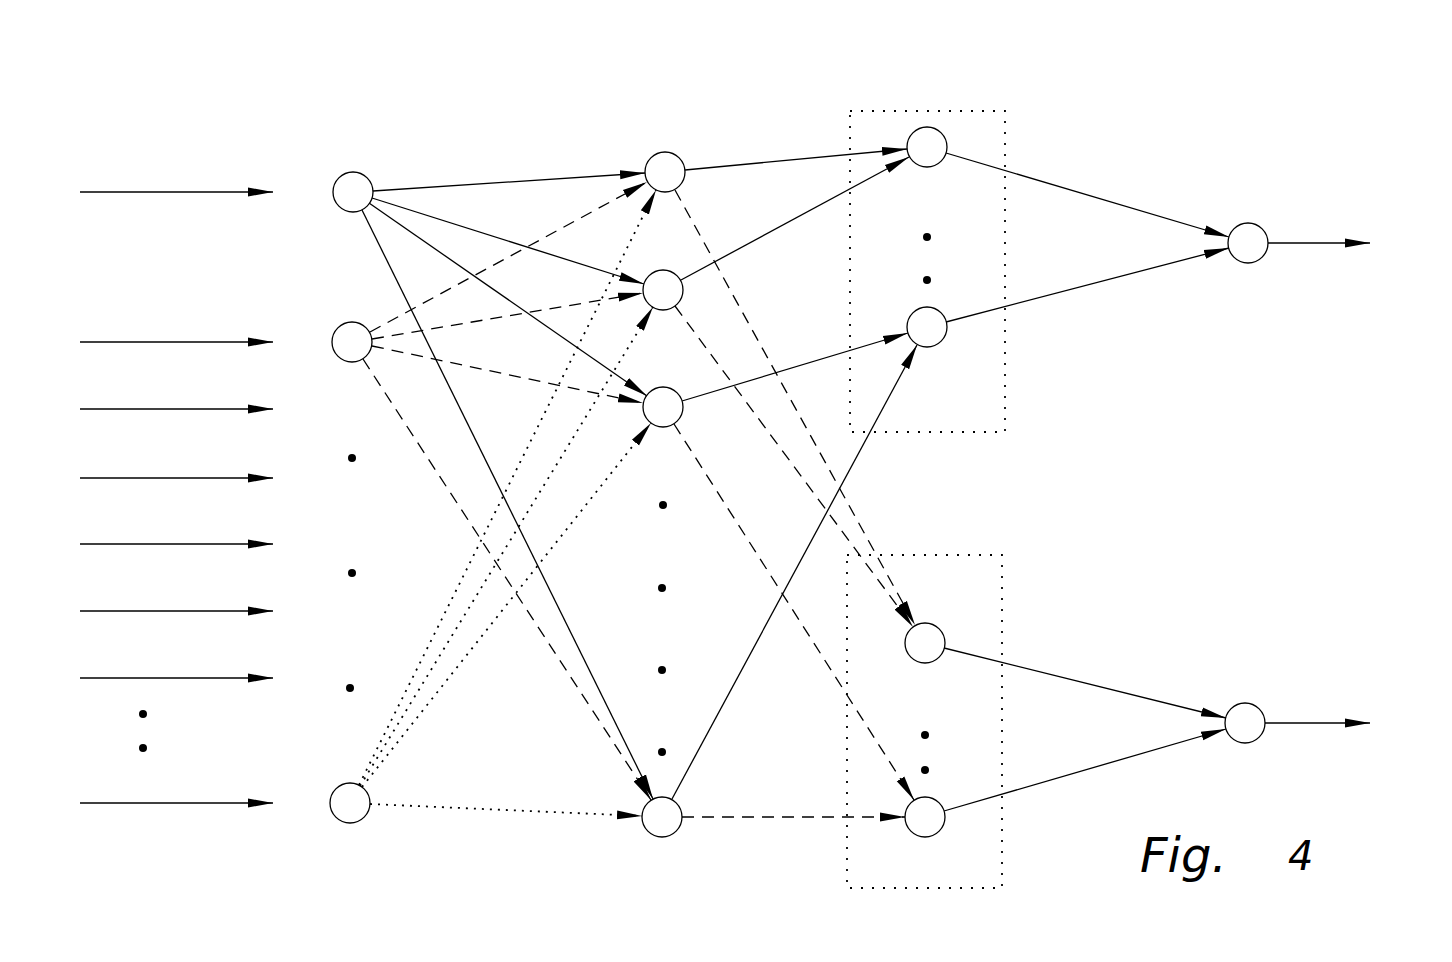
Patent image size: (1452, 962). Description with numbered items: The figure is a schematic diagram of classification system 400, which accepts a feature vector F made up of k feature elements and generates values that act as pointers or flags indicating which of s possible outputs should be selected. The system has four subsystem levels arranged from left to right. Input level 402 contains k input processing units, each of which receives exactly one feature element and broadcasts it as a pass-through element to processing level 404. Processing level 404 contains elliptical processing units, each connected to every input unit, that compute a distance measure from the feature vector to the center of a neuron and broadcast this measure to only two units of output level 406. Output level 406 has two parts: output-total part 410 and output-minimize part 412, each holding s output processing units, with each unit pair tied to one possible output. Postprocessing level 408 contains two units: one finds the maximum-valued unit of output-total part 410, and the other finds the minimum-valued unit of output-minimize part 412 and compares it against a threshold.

The classification system 400 is at (1341, 423).
The input level 402 is at (343, 164).
The processing level 404 is at (648, 148).
The output level 406 is at (845, 126).
The postprocessing level 408 is at (1249, 214).
The output-total part 410 is at (958, 432).
The output-minimize part 412 is at (962, 553).